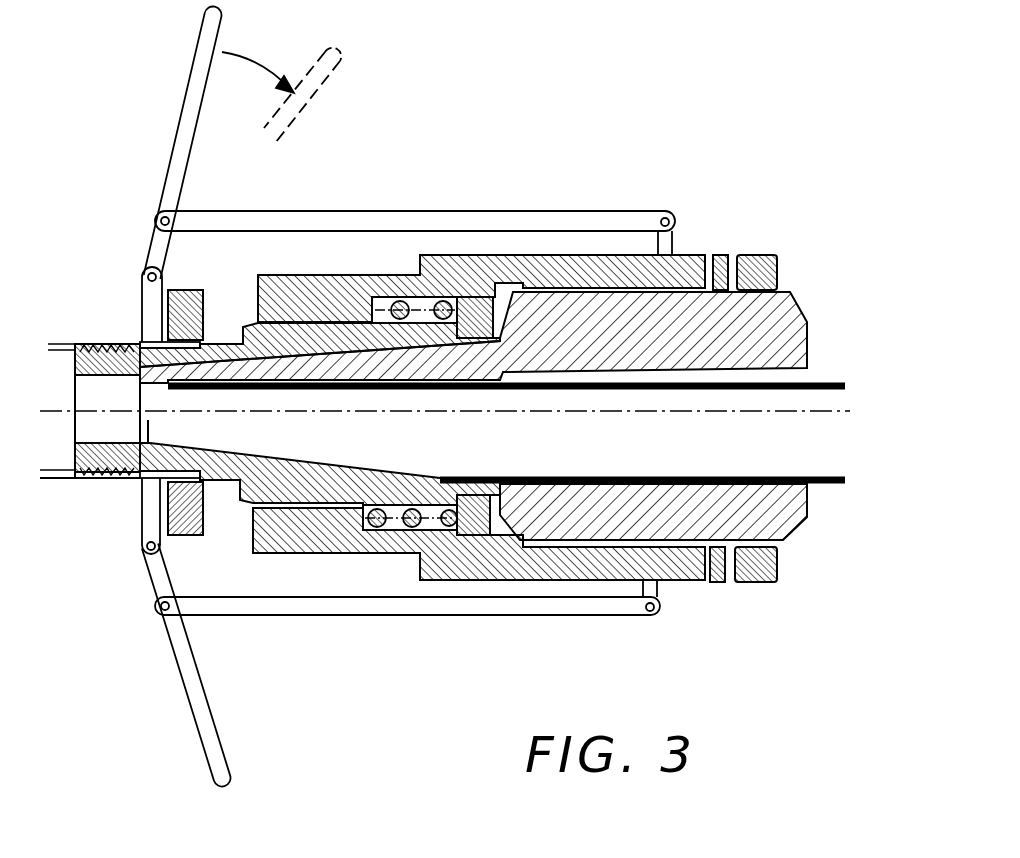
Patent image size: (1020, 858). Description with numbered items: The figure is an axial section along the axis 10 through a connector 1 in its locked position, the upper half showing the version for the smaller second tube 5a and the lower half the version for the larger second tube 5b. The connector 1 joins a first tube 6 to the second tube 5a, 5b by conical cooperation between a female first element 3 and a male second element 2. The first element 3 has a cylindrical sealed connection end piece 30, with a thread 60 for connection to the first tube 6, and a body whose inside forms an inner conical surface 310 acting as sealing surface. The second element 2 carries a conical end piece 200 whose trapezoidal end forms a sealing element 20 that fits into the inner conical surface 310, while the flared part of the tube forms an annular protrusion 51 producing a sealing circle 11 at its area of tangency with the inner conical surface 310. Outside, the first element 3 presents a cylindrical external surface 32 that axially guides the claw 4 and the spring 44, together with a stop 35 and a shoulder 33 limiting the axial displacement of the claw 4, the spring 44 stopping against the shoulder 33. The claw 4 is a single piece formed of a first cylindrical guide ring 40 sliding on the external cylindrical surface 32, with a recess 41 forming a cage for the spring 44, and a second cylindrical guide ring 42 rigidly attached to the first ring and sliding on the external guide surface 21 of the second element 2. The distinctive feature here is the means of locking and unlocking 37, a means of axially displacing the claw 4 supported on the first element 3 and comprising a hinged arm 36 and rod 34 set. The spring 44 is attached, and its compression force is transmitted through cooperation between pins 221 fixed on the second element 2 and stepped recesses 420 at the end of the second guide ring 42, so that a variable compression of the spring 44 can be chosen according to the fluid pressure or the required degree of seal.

The connector 1 is at (397, 683).
The second element 2 is at (780, 318).
The first element 3 is at (257, 490).
The claw 4 is at (417, 277).
The second tube 5a is at (748, 390).
The second tube 5b is at (805, 478).
The first tube 6 is at (110, 343).
The axis 10 is at (103, 413).
The sealing circle 11 is at (145, 340).
The sealing element 20 is at (445, 350).
The external guide surface 21 is at (630, 540).
The cylindrical connection end piece 30 is at (72, 356).
The external cylindrical surface 32 is at (295, 500).
The shoulder 33 is at (480, 300).
The rod 34 is at (232, 222).
The stop 35 is at (203, 305).
The hinged arm 36 is at (193, 696).
The means of locking/unlocking 37 is at (218, 632).
The first cylindrical guide ring 40 is at (300, 300).
The recess 41 is at (388, 530).
The second cylindrical guide ring 42 is at (683, 253).
The spring 44 is at (413, 527).
The annular protrusion 51 is at (182, 384).
The thread 60 is at (103, 480).
The conical end piece 200 is at (375, 356).
The pins 221 is at (722, 258).
The inner conical surface 310 is at (247, 326).
The recess 420 is at (710, 260).